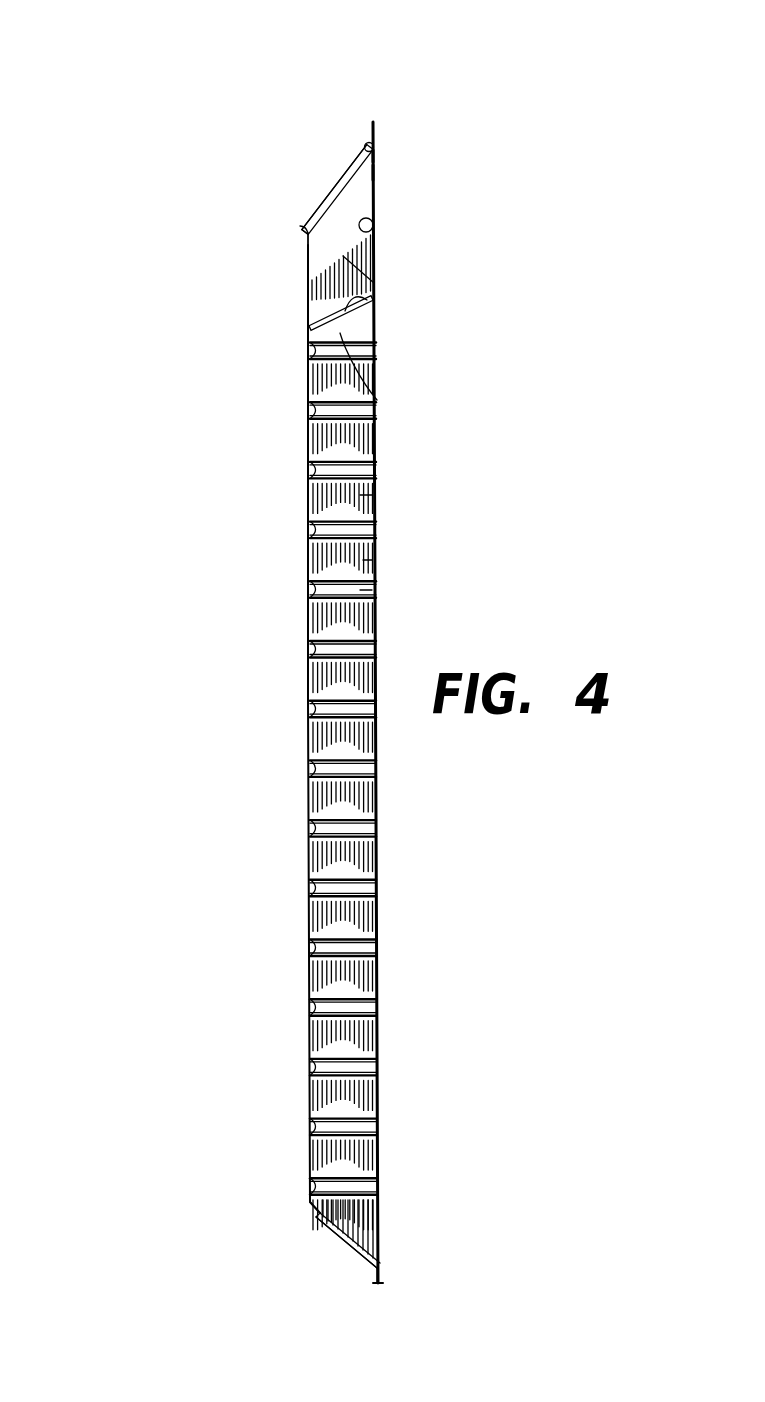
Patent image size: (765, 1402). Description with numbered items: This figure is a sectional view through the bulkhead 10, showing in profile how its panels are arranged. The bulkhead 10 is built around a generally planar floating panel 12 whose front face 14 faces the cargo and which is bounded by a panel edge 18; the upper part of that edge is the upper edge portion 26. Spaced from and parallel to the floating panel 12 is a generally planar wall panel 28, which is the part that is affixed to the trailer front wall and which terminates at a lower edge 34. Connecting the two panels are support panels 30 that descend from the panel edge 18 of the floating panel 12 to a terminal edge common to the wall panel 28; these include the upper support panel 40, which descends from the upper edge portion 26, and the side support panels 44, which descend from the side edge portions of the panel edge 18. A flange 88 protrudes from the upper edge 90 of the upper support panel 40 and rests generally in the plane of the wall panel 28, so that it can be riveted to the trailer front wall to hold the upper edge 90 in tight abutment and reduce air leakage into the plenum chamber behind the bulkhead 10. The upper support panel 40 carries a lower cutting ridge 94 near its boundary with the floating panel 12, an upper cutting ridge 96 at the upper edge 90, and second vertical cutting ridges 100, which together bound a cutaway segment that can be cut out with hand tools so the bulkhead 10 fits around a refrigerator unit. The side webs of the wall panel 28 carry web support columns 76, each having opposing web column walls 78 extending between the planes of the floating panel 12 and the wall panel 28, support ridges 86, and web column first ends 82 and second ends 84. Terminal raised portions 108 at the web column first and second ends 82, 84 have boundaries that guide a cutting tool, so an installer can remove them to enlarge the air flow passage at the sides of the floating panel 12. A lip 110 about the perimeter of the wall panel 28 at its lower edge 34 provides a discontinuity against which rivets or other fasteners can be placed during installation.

The bulkhead 10 is at (119, 336).
The floating panel 12 is at (305, 290).
The front face 14 is at (305, 307).
The panel edge 18 is at (307, 258).
The upper edge portion 26 is at (305, 240).
The wall panel 28 is at (374, 242).
The support panels 30 is at (374, 280).
The lower edge 34 is at (372, 1278).
The upper support panel 40 is at (333, 190).
The side support panels 44 is at (375, 297).
The web support columns 76 is at (377, 495).
The web column walls 78 is at (370, 560).
The web column first ends 82 is at (315, 1213).
The web column second ends 84 is at (377, 400).
The support ridges 86 is at (365, 590).
The flange 88 is at (372, 142).
The upper edge 90 is at (374, 172).
The lower cutting ridge 94 is at (305, 231).
The upper cutting ridge 96 is at (374, 156).
The second vertical cutting ridges 100 is at (347, 173).
The raised portions 108 is at (375, 307).
The lip 110 is at (345, 1268).